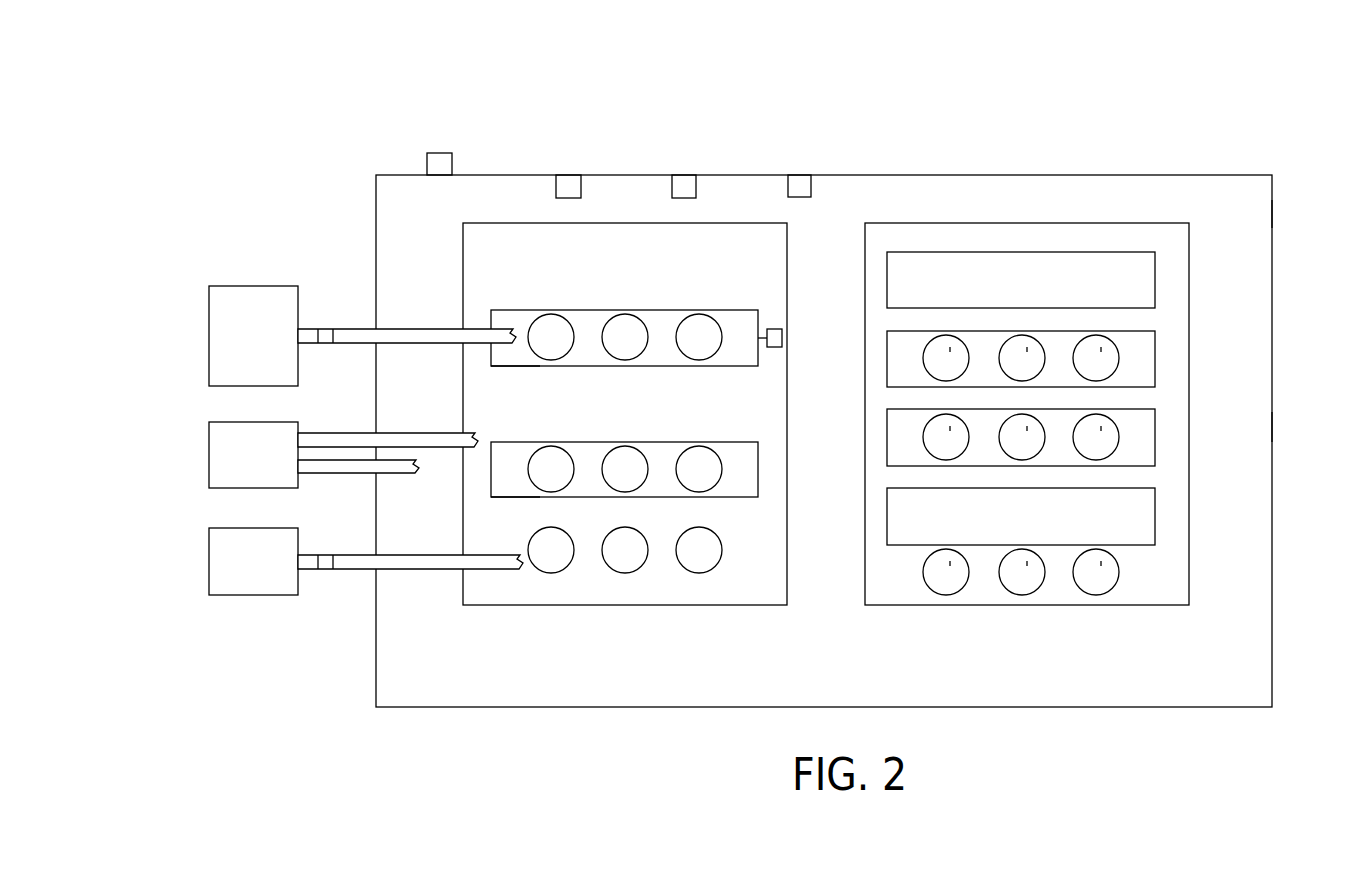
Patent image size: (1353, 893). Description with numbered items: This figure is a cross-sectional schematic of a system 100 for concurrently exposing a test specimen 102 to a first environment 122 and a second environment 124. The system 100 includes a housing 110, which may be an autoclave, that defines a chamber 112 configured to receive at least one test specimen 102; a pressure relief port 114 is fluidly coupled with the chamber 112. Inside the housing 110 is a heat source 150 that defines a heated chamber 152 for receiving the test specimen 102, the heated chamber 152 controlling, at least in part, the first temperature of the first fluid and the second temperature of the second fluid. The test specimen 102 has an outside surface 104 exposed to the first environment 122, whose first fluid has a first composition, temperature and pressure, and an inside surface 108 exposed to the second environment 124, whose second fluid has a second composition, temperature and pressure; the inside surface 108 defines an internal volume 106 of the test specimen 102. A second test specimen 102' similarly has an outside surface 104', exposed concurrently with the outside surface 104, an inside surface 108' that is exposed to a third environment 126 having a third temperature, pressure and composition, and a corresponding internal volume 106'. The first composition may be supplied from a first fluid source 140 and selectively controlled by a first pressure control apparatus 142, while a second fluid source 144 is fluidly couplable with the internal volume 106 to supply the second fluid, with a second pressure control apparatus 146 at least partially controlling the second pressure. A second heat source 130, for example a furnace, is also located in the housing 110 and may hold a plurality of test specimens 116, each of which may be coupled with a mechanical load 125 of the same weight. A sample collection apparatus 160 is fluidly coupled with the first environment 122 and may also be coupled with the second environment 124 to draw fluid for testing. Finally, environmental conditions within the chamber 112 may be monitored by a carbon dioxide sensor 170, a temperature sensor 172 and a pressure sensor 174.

The system 100 is at (1272, 116).
The test specimen 102 is at (624, 315).
The second test specimen 102' is at (624, 445).
The outside surface 104 is at (641, 308).
The outside surface 104' is at (647, 440).
The internal volume 106 is at (491, 308).
The temperature sensor 106' is at (489, 432).
The inside surface 108 is at (718, 308).
The inside surface 108' is at (726, 440).
The housing 110 is at (1272, 283).
The chamber 112 is at (1272, 213).
The pressure relief port 114 is at (452, 164).
The plurality of test specimens 116 is at (1171, 222).
The first environment 122 is at (1272, 427).
The second environment 124 is at (522, 358).
The mechanical load 125 is at (782, 338).
The third environment 126 is at (512, 488).
The second heat source 130 is at (1053, 195).
The first fluid source 140 is at (209, 560).
The first pressure control apparatus 142 is at (325, 555).
The second fluid source 144 is at (209, 335).
The second pressure control apparatus 146 is at (325, 328).
The heat source 150 is at (721, 196).
The heated chamber 152 is at (467, 248).
The sample collection apparatus 160 is at (209, 452).
The carbon dioxide sensor 170 is at (556, 186).
The temperature sensor 172 is at (672, 186).
The pressure sensor 174 is at (811, 186).